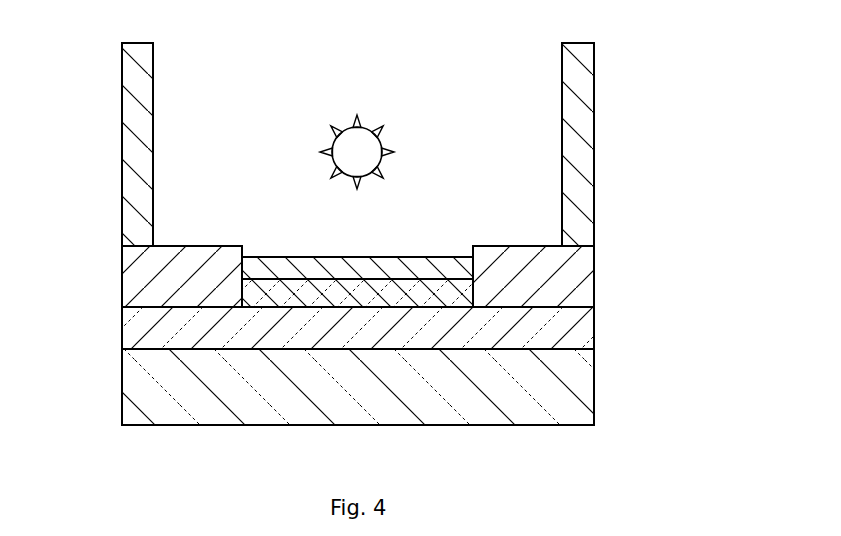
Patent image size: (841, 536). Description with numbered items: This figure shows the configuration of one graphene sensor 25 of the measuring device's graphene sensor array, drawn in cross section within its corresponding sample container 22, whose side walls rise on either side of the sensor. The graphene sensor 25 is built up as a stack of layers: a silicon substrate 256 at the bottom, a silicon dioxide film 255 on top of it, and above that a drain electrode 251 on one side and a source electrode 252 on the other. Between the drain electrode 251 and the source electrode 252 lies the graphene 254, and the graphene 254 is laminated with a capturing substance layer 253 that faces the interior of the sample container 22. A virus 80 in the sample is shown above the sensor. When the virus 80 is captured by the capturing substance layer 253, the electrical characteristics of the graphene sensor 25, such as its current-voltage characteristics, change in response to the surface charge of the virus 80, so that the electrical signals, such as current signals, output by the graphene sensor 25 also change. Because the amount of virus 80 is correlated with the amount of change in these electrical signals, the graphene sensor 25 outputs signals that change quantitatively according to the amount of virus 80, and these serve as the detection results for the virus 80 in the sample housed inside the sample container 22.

The sample container 22 is at (132, 133).
The graphene sensor 25 is at (426, 329).
The virus 80 is at (370, 143).
The drain electrode 251 is at (595, 274).
The source electrode 252 is at (130, 282).
The capturing substance layer 253 is at (437, 262).
The graphene 254 is at (342, 288).
The silicon dioxide film 255 is at (595, 331).
The silicon substrate 256 is at (402, 387).